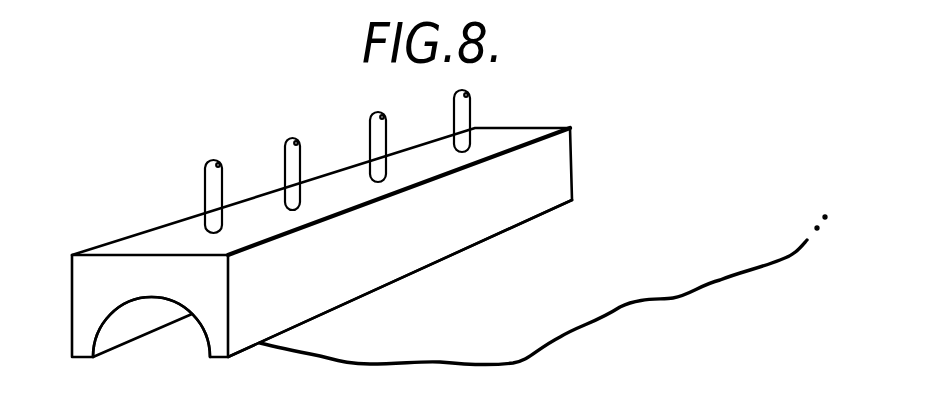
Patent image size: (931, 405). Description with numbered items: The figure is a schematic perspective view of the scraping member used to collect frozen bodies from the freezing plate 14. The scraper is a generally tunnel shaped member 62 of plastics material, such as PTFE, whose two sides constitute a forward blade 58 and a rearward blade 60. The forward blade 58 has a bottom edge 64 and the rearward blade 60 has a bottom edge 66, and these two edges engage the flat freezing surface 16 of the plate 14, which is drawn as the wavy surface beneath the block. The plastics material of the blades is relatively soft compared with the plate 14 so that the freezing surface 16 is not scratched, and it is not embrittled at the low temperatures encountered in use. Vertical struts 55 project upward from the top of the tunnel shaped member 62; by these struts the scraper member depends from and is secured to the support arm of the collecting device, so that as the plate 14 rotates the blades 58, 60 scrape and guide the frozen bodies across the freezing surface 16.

The freezing plate 14 is at (680, 298).
The freezing surface 16 is at (556, 290).
The vertical struts 55 is at (286, 152).
The forward blade 58 is at (70, 337).
The rearward blade 60 is at (357, 263).
The tunnel shaped member 62 is at (190, 243).
The bottom edge 64 is at (116, 350).
The bottom edge 66 is at (308, 322).